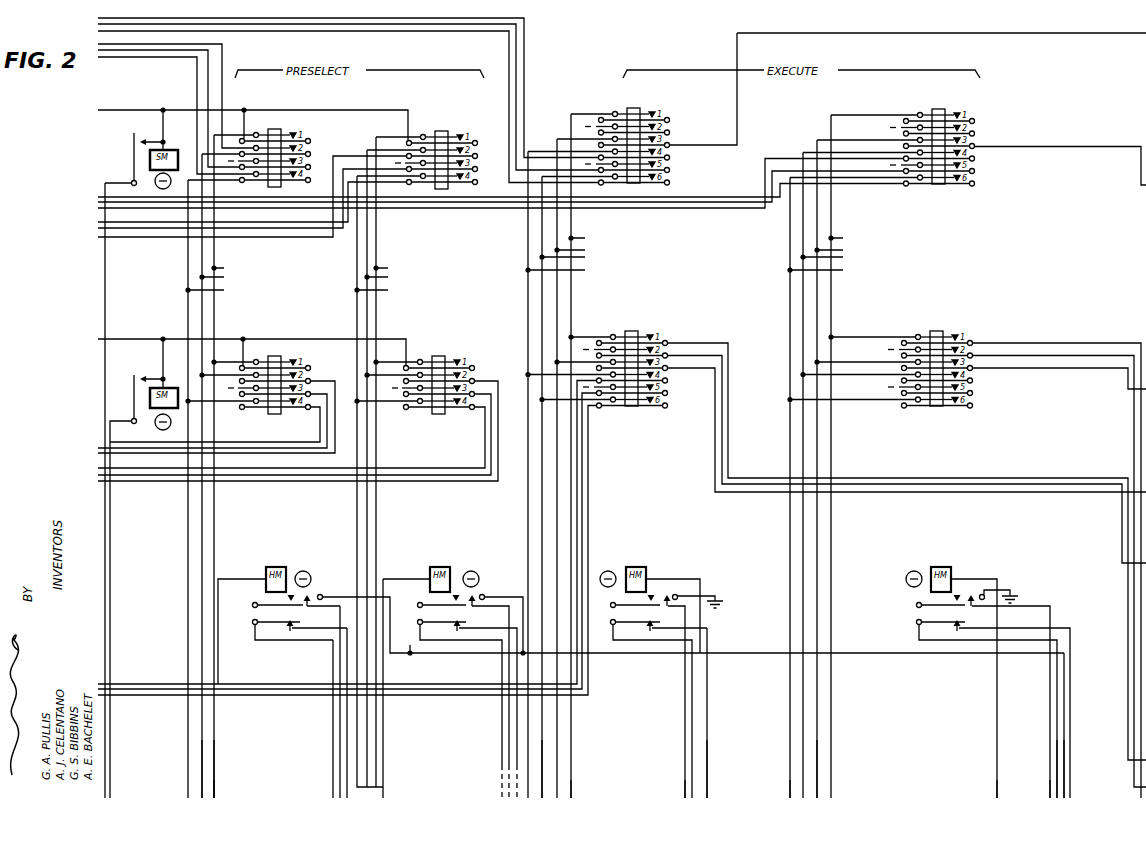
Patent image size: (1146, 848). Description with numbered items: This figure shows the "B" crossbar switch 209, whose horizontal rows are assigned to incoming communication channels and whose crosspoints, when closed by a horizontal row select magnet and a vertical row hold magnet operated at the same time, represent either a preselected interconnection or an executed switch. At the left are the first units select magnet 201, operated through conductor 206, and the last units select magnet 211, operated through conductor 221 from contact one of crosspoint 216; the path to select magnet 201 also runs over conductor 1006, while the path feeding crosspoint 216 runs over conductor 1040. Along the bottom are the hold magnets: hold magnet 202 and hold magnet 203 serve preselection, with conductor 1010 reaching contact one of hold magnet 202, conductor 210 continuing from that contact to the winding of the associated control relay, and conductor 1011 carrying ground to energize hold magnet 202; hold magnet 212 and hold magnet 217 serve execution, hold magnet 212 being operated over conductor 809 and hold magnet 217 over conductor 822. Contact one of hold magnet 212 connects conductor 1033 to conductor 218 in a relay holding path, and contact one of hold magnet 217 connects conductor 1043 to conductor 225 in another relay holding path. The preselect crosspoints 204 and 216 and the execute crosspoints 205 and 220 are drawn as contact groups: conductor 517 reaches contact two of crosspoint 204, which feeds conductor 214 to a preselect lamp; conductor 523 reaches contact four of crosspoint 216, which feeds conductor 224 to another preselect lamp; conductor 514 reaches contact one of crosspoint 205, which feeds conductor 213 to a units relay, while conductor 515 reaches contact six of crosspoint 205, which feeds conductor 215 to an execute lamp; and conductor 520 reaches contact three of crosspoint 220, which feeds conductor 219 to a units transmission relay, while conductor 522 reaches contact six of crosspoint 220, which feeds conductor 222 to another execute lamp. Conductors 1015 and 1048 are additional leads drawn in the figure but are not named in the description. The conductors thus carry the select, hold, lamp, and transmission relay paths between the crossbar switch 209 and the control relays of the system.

The units select magnet 201 is at (173, 388).
The hold magnet 202 is at (276, 567).
The hold magnet 203 is at (442, 567).
The crosspoint 204 is at (276, 355).
The crosspoint 205 is at (630, 331).
The conductor 206 is at (107, 339).
The crossbar switch B 209 is at (752, 453).
The conductor 210 is at (334, 655).
The last units select magnet 211 is at (172, 149).
The hold magnet 212 is at (636, 567).
The conductor 213 is at (710, 343).
The conductor 214 is at (248, 453).
The conductor 215 is at (589, 678).
The crosspoint 216 is at (437, 130).
The hold magnet 217 is at (943, 567).
The conductor 218 is at (707, 633).
The conductor 219 is at (1120, 146).
The crosspoint 220 is at (938, 108).
The conductor 221 is at (343, 110).
The conductor 222 is at (852, 178).
The conductor 224 is at (283, 229).
The conductor 225 is at (1070, 755).
The conductor 514 is at (572, 787).
The conductor 515 is at (545, 758).
The conductor 517 is at (200, 755).
The conductor 520 is at (818, 755).
The conductor 522 is at (790, 787).
The conductor 523 is at (383, 787).
The conductor 809 is at (706, 755).
The conductor 822 is at (997, 787).
The conductor 1006 is at (108, 556).
The conductor 1010 is at (341, 672).
The conductor 1011 is at (215, 787).
The conductor 1015 is at (215, 755).
The conductor 1033 is at (686, 787).
The conductor 1040 is at (378, 320).
The conductor 1043 is at (1050, 787).
The conductor 1048 is at (108, 576).